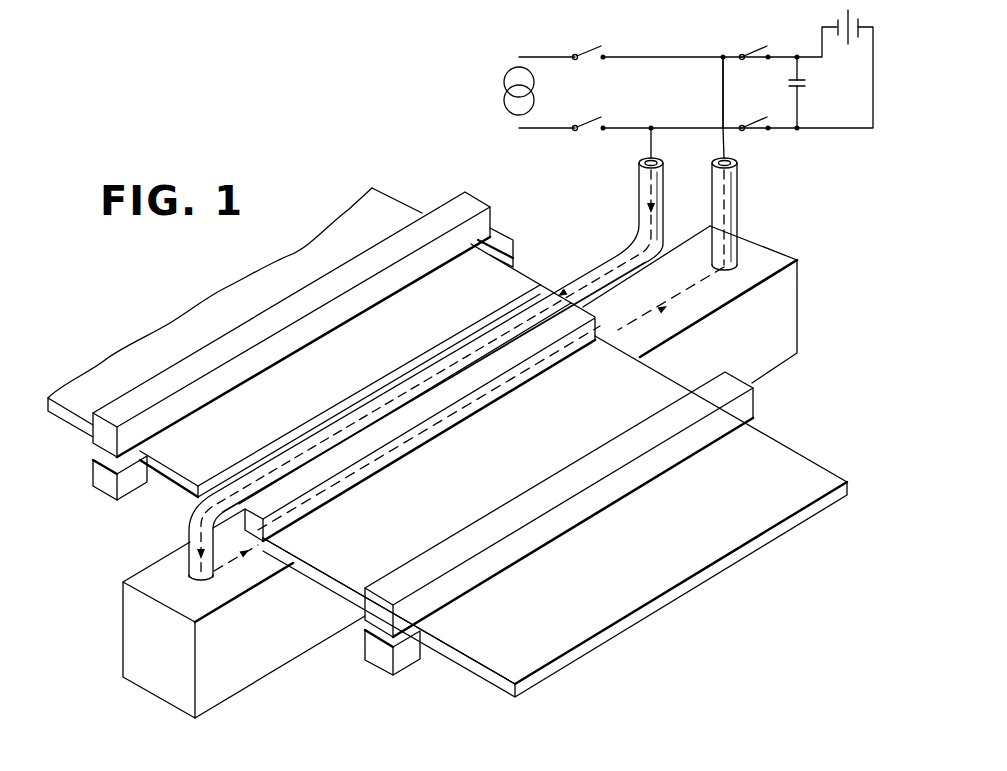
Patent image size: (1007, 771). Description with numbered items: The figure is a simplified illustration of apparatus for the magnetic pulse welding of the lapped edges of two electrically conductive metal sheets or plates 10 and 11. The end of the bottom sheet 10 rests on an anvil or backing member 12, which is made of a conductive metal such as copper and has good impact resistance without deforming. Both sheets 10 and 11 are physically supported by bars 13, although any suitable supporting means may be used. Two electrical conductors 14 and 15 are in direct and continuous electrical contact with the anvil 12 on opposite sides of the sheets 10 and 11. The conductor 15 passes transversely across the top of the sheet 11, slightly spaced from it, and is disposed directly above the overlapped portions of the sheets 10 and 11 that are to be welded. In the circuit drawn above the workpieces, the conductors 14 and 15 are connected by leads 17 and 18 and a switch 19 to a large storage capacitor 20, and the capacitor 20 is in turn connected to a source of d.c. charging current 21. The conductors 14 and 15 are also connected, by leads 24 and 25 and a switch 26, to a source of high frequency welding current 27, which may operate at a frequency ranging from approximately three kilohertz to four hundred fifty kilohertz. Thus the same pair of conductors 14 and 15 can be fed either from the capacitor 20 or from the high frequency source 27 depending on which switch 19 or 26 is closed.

The bottom sheet 10 is at (328, 585).
The top sheet 11 is at (178, 487).
The anvil 12 is at (162, 572).
The bars 13 is at (97, 475).
The electrical conductor 14 is at (740, 212).
The electrical conductor 15 is at (618, 251).
The lead 17 is at (733, 132).
The lead 18 is at (732, 55).
The switch 19 is at (760, 50).
The storage capacitor 20 is at (807, 89).
The source of d.c. charging current 21 is at (860, 44).
The lead 24 is at (630, 125).
The lead 25 is at (677, 53).
The switch 26 is at (596, 51).
The source of high frequency welding current 27 is at (503, 106).